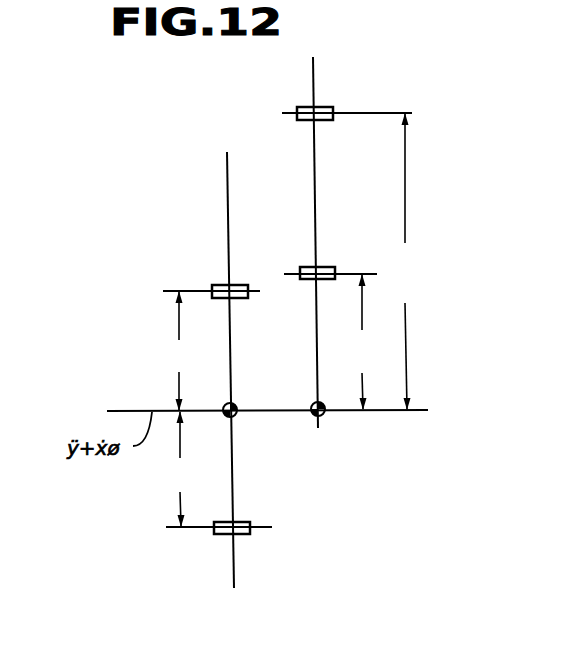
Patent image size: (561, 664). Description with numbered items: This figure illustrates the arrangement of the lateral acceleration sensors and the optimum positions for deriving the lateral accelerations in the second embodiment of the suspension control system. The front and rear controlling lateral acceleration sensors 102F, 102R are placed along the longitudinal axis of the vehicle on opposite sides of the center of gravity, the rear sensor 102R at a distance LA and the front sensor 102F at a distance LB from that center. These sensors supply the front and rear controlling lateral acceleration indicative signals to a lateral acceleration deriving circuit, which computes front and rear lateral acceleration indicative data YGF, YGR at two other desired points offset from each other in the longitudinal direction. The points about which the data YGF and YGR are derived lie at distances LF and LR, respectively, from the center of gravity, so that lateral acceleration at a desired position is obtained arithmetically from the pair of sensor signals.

The rear controlling lateral acceleration sensor 102R is at (221, 285).
The front controlling lateral acceleration sensor 102F is at (227, 534).
The rear lateral acceleration indicative data YGR is at (329, 107).
The front lateral acceleration indicative data YGF is at (322, 267).
The distance of rear derived point from center of gravity LR is at (397, 261).
The distance of front derived point from center of gravity LF is at (353, 342).
The distance of rear sensor from center of gravity LA is at (170, 351).
The distance of front sensor from center of gravity LB is at (174, 469).